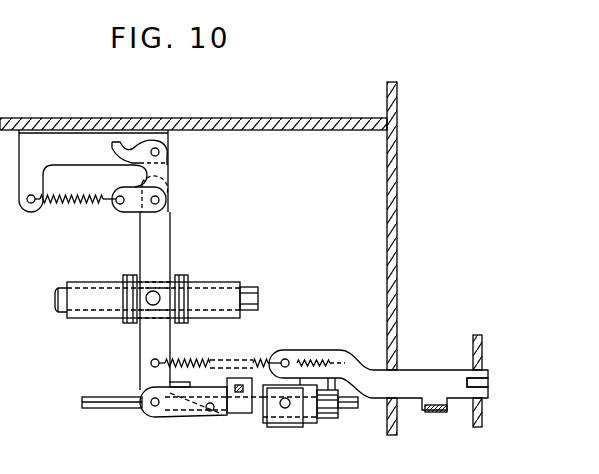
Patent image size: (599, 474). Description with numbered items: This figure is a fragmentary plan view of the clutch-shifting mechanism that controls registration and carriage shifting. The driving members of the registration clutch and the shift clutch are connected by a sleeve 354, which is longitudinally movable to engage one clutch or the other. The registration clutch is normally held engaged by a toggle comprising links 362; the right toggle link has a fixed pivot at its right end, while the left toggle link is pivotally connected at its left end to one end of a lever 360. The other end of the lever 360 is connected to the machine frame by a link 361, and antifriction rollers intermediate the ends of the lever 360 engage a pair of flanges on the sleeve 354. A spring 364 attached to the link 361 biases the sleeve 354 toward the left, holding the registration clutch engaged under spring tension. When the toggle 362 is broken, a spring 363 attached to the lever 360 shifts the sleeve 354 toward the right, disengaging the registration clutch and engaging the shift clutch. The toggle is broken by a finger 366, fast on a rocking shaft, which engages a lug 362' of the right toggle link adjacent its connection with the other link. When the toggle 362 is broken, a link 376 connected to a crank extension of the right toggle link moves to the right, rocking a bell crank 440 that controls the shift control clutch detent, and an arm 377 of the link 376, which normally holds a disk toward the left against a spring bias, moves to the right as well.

The link 361 is at (165, 175).
The spring 364 is at (70, 205).
The lever 360 is at (158, 240).
The sleeve 354 is at (210, 293).
The spring 363 is at (208, 348).
The finger 366 is at (238, 385).
The lug 362' is at (300, 377).
The link 376 is at (407, 380).
The bell crank 440 is at (478, 382).
The toggle links 362 is at (155, 419).
The arm 377 is at (428, 413).